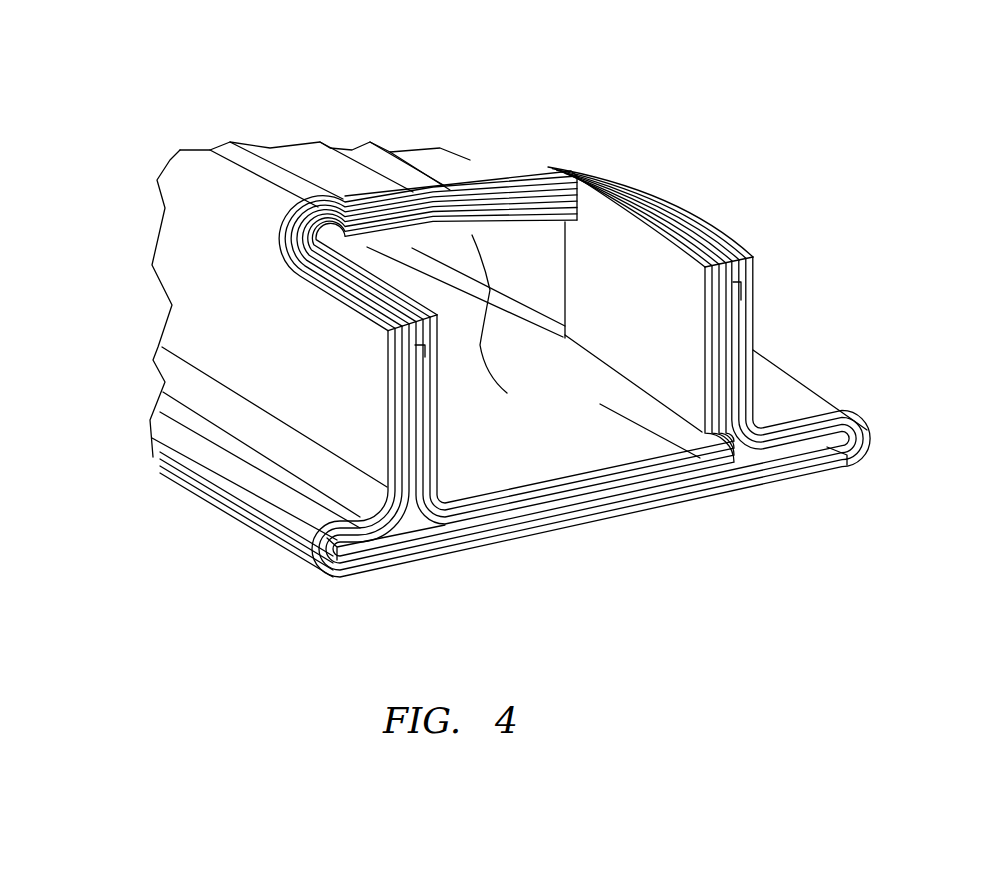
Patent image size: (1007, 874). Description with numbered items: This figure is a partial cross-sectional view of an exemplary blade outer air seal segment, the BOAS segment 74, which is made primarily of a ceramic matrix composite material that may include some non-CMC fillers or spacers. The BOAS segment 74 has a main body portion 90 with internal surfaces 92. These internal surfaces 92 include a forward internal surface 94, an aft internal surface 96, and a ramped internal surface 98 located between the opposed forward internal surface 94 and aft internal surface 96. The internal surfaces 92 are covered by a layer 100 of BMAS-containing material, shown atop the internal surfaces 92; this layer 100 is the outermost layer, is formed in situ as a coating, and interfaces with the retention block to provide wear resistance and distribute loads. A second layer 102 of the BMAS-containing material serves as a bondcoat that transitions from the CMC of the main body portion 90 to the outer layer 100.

The BOAS segment 74 is at (233, 82).
The main body portion 90 is at (125, 353).
The internal surfaces 92 is at (555, 320).
The forward internal surface 94 is at (653, 197).
The aft internal surface 96 is at (428, 415).
The ramped internal surface 98 is at (497, 215).
The layer 100 is at (662, 302).
The second layer 102 is at (448, 202).